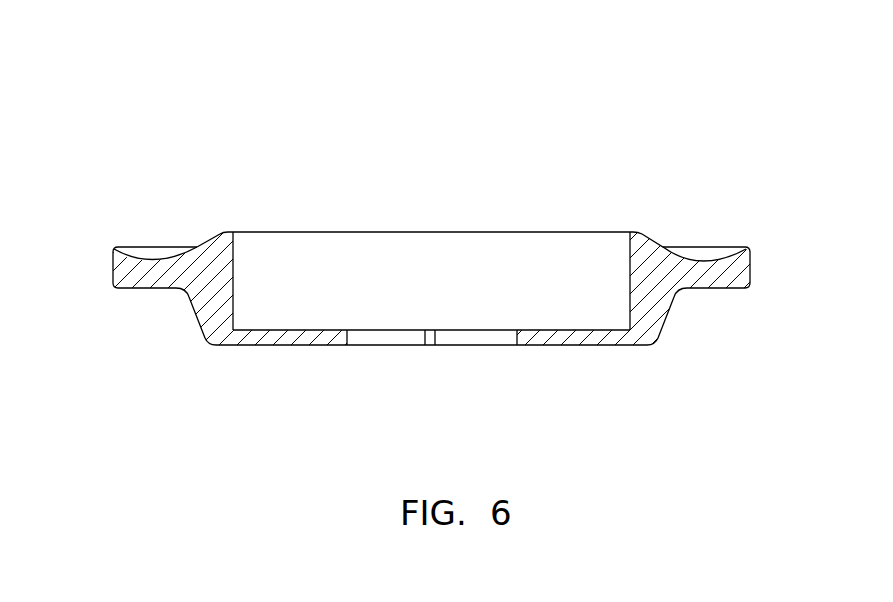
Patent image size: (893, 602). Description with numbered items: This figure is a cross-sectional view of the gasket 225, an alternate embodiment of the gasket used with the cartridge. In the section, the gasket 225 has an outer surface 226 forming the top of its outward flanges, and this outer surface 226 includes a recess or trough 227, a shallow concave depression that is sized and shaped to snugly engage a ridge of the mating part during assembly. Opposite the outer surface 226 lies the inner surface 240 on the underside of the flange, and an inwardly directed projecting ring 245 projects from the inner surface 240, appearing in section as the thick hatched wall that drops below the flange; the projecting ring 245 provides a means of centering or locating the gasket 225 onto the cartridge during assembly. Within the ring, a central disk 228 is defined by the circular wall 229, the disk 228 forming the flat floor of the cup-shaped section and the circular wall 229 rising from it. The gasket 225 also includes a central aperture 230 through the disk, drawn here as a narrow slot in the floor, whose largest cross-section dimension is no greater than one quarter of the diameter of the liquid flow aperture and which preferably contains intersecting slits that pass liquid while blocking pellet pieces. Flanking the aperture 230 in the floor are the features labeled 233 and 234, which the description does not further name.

The gasket 225 is at (293, 138).
The outer surface 226 is at (683, 248).
The recess or trough 227 is at (173, 260).
The central disk 228 is at (290, 331).
The circular wall 229 is at (235, 278).
The central aperture 230 is at (393, 337).
The recess left edge 233 is at (350, 337).
The recess right edge 234 is at (513, 335).
The inner surface 240 is at (697, 288).
The projecting ring 245 is at (193, 303).